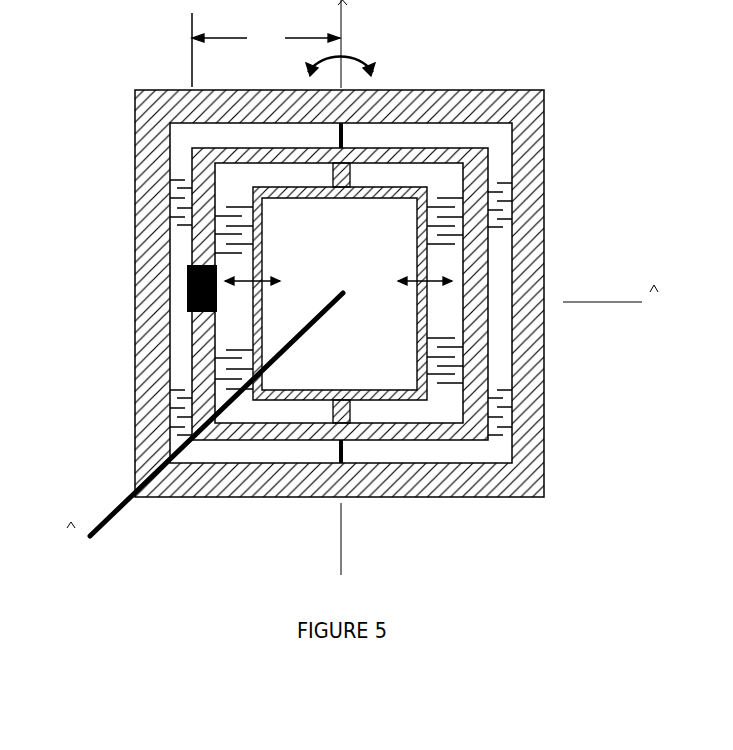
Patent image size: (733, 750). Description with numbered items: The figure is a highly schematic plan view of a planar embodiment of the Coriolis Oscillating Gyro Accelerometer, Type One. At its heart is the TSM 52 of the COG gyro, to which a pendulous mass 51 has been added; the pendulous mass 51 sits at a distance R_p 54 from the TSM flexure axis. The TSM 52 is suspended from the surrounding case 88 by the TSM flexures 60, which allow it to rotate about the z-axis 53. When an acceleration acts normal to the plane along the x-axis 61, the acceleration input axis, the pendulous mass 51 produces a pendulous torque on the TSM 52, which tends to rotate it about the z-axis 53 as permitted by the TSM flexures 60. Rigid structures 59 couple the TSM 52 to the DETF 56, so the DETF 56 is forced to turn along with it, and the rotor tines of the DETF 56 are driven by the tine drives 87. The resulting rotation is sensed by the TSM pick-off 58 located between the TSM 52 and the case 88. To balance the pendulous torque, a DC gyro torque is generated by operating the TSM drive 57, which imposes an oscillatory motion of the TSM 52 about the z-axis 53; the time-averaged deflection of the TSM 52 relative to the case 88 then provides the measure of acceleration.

The pendulous mass 51 is at (182, 296).
The TSM 52 is at (348, 303).
The z-axis 53 is at (413, 287).
The distance R_p 54 is at (266, 50).
The DETF 56 is at (247, 192).
The TSM drive 57 is at (503, 190).
The TSM pick-off 58 is at (167, 197).
The rigid structures 59 is at (333, 177).
The TSM flexures 60 is at (345, 138).
The x-axis 61 is at (181, 446).
The tine drives 87 is at (440, 195).
The case 88 is at (548, 452).